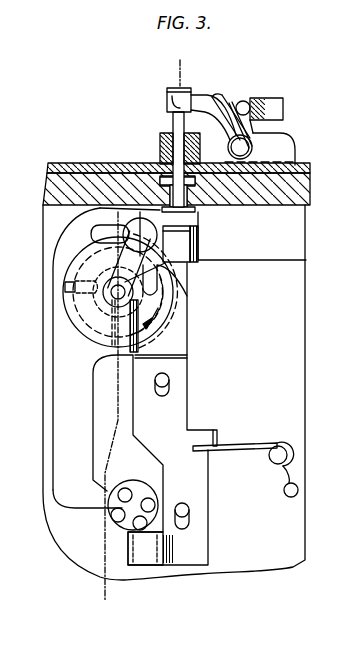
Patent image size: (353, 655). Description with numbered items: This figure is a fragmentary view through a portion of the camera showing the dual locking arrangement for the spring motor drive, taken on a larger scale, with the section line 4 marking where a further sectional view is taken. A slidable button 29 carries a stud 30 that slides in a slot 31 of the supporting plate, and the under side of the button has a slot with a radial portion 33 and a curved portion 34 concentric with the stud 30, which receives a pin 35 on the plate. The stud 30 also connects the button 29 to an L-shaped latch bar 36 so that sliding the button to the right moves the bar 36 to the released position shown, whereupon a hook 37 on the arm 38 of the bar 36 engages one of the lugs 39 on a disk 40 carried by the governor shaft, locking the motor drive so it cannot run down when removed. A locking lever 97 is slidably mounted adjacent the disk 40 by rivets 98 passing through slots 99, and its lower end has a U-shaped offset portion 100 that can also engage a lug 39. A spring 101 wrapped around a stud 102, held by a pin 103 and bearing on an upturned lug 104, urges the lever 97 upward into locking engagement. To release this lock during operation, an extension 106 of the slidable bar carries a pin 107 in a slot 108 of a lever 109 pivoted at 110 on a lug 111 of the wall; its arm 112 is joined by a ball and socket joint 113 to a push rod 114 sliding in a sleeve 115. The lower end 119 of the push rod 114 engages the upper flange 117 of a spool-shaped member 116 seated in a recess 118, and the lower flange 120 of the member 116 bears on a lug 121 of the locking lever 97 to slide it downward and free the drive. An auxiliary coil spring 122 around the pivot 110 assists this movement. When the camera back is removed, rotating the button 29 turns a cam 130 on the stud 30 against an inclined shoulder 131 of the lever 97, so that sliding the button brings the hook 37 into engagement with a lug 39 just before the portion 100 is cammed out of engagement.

The section line 4- 4 is at (175, 55).
The slidable button 29 is at (70, 322).
The stud 30 is at (113, 308).
The slot 31 is at (93, 298).
The radial portion 33 is at (75, 282).
The curved portion 34 is at (83, 275).
The pin 35 is at (65, 288).
The L-shaped latch bar 36 is at (57, 393).
The hook 37 is at (107, 507).
The arm 38 is at (57, 481).
The lugs 39 is at (136, 527).
The disk 40 is at (137, 486).
The locking lever 97 is at (180, 400).
The rivets 98 is at (169, 379).
The slots 99 is at (169, 389).
The U-shaped offset portion 100 is at (148, 560).
The spring 101 is at (259, 445).
The stud 102 is at (276, 463).
The pin 103 is at (288, 498).
The upturned lug 104 is at (215, 441).
The extension 106 is at (272, 100).
The pin 107 is at (246, 101).
The slot 108 is at (229, 103).
The lever 109 is at (253, 103).
The pivot 110 is at (249, 146).
The lug 111 is at (232, 156).
The arm 112 is at (197, 97).
The ball and socket joint 113 is at (169, 97).
The push rod 114 is at (174, 123).
The sleeve 115 is at (162, 146).
The spool-shaped member 116 is at (196, 208).
The upper flange 117 is at (160, 187).
The recess 118 is at (230, 205).
The lower end 119 is at (172, 164).
The flange 120 is at (199, 222).
The lug 121 is at (199, 263).
The coil spring 122 is at (250, 118).
The cam 130 is at (112, 272).
The inclined shoulder 131 is at (183, 307).